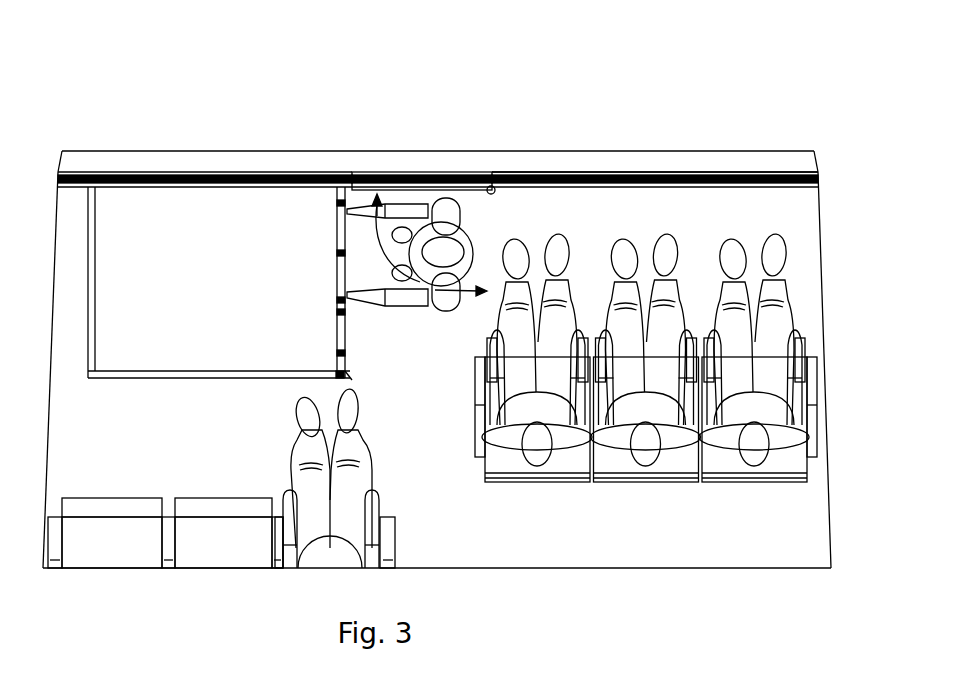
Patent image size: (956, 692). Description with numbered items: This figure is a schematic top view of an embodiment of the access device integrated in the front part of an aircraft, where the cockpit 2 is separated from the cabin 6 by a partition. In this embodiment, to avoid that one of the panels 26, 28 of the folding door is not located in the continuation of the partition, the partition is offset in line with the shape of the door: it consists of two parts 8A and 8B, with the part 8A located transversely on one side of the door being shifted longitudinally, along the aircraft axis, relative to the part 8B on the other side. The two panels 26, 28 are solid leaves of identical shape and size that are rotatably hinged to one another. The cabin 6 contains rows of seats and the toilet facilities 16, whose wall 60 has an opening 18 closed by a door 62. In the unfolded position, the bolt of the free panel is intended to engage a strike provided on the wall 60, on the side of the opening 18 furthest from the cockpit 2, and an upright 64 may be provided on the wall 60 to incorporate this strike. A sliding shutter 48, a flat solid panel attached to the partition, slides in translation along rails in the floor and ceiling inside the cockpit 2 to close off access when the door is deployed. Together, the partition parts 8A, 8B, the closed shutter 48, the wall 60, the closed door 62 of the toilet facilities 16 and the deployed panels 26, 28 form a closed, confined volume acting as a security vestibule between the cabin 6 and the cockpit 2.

The cockpit 2 is at (177, 158).
The cabin 6 is at (680, 525).
The first part of the partition 8A is at (237, 172).
The second part of the partition 8B is at (715, 187).
The toilet facilities 16 is at (128, 213).
The opening 18 is at (339, 226).
The panel 26 is at (455, 177).
The panel 28 is at (395, 182).
The shutter 48 is at (565, 171).
The wall 60 is at (338, 378).
The door 62 is at (336, 222).
The upright 64 is at (350, 378).